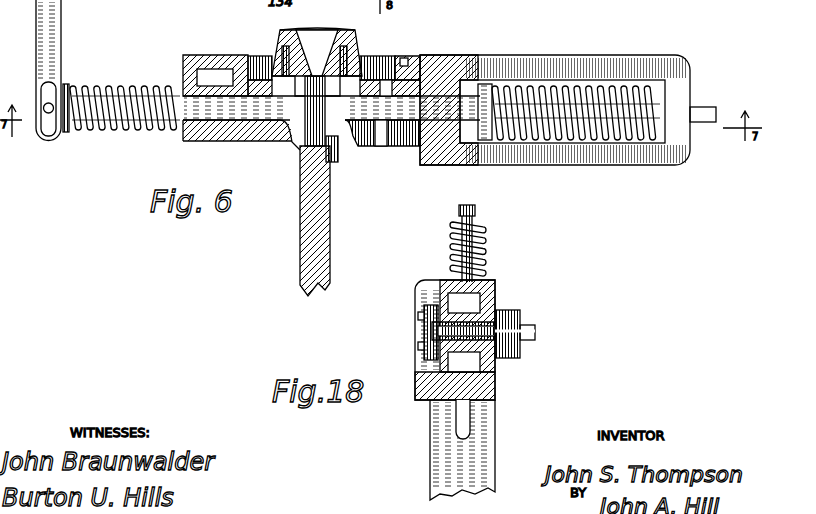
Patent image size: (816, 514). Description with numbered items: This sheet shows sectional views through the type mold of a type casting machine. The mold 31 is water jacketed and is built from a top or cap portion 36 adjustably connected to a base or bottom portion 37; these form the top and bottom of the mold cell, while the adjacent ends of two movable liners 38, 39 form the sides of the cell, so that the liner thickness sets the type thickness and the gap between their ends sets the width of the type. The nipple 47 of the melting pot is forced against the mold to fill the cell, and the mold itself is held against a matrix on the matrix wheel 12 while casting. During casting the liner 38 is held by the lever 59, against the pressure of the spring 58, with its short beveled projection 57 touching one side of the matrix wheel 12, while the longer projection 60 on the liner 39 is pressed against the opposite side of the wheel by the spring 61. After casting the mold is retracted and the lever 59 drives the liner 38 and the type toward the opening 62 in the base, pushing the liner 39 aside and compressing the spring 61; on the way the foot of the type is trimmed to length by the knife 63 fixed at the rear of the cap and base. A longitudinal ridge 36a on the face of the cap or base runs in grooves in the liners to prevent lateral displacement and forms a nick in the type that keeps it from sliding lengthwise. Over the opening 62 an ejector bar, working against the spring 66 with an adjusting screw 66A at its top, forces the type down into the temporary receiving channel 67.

In FIG. 6, the matrix wheel 12 is at (331, 228).
In FIG. 6, the mold 31 is at (240, 141).
In FIG. 18, the cap portion of mold 36 is at (496, 283).
In FIG. 6, the ridge on mold face 36a is at (272, 56).
In FIG. 18, the ridge on mold face 36a is at (440, 330).
In FIG. 18, the base portion of mold 37 is at (496, 372).
In FIG. 6, the movable liner 38 is at (205, 110).
In FIG. 6, the movable liner 39 is at (430, 108).
In FIG. 18, the movable liner 39 is at (490, 332).
In FIG. 6, the nipple of melting pot 47 is at (310, 70).
In FIG. 6, the short projection on liner 38 57 is at (300, 146).
In FIG. 6, the spring 58 is at (112, 88).
In FIG. 6, the lever 59 is at (55, 22).
In FIG. 6, the projection on liner 39 60 is at (338, 152).
In FIG. 18, the projection on liner 39 60 is at (536, 333).
In FIG. 6, the spring 61 is at (556, 130).
In FIG. 6, the opening in mold base 62 is at (382, 132).
In FIG. 6, the knife 63 is at (400, 68).
In FIG. 18, the knife 63 is at (430, 330).
In FIG. 18, the spring 66 is at (482, 251).
In FIG. 18, the adjusting screw 66A is at (478, 212).
In FIG. 18, the temporary receiving channel 67 is at (440, 448).